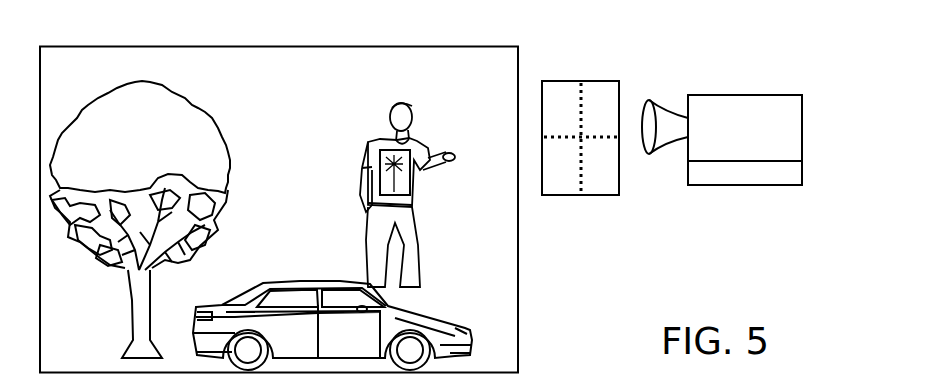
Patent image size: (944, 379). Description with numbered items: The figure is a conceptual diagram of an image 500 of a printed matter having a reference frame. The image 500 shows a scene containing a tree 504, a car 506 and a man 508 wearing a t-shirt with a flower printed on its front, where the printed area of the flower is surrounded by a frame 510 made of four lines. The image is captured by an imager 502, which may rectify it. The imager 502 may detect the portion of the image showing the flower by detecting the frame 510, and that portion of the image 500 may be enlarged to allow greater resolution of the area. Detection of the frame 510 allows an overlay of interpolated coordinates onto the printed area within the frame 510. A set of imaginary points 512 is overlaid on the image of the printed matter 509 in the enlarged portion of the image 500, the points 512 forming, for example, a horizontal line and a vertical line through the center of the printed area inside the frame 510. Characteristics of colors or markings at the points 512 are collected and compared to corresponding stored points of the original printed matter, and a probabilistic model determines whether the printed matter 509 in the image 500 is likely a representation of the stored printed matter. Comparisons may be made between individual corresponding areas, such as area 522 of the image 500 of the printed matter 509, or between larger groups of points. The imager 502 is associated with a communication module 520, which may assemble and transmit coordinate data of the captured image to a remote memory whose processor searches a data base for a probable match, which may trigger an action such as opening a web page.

The image 500 is at (722, 127).
The imager 502 is at (745, 148).
The tree 504 is at (133, 303).
The car 506 is at (318, 280).
The man 508 is at (412, 137).
The printed matter 509 is at (503, 142).
The frame 510 is at (410, 185).
The imaginary points 512 is at (581, 81).
The communication module 520 is at (790, 186).
The corresponding area 522 is at (611, 140).